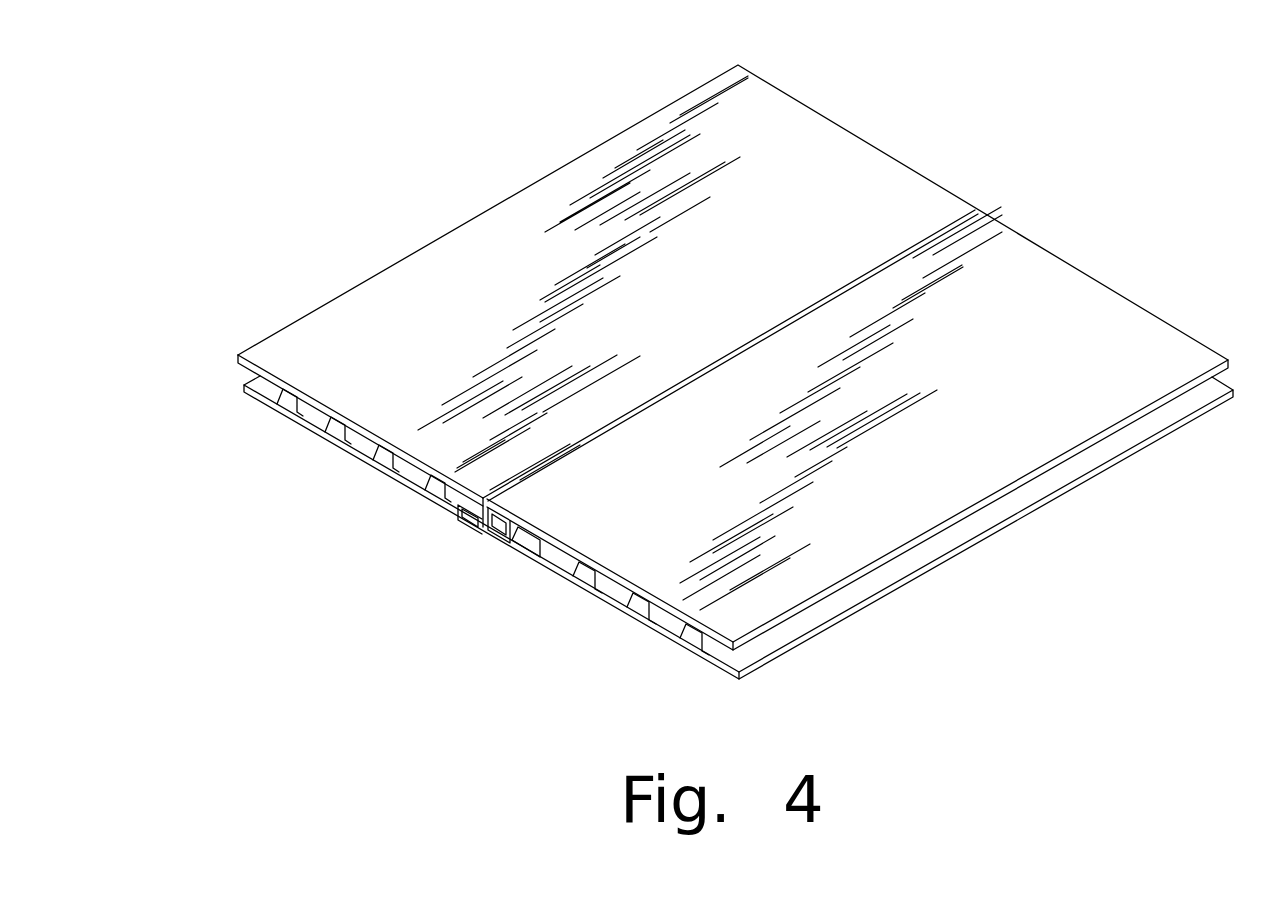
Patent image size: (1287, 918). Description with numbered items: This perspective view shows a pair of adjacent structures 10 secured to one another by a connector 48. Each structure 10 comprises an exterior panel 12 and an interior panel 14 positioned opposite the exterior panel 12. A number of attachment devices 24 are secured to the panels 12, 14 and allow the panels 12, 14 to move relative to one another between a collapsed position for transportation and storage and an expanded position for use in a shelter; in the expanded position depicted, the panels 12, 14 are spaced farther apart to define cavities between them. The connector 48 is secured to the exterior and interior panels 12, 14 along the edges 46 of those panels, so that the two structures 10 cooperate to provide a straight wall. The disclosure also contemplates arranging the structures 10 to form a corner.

The structure 10 is at (924, 106).
The exterior panel 12 is at (808, 147).
The interior panel 14 is at (301, 423).
The attachment device 24 is at (354, 440).
The edge 46 is at (750, 340).
The connector 48 is at (470, 518).